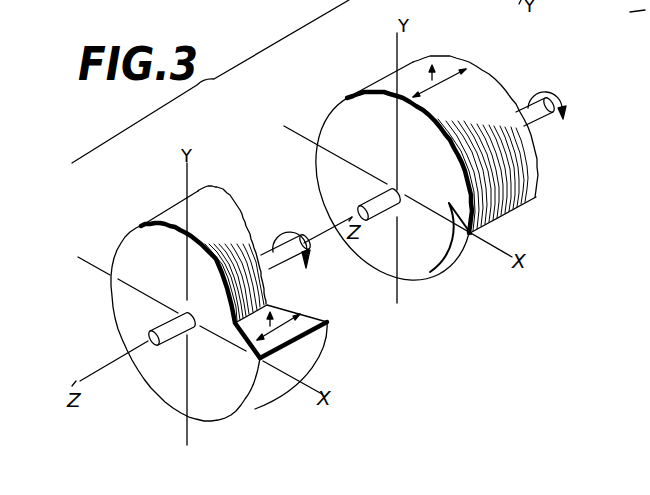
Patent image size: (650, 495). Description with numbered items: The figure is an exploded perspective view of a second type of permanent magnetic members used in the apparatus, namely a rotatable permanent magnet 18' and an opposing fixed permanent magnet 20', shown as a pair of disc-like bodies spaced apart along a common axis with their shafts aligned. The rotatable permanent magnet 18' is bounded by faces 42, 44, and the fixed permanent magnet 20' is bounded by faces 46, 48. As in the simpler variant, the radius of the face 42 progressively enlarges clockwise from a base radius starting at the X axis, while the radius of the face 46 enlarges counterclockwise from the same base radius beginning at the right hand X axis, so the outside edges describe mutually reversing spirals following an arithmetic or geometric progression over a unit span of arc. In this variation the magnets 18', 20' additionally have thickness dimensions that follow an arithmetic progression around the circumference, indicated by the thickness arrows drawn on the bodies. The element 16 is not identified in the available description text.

The shaft 16 is at (388, 209).
The rotatable permanent magnet 18' is at (442, 132).
The fixed permanent magnet 20' is at (234, 285).
The face 42 is at (349, 99).
The face 44 is at (504, 93).
The face 46 is at (128, 246).
The face 48 is at (252, 226).